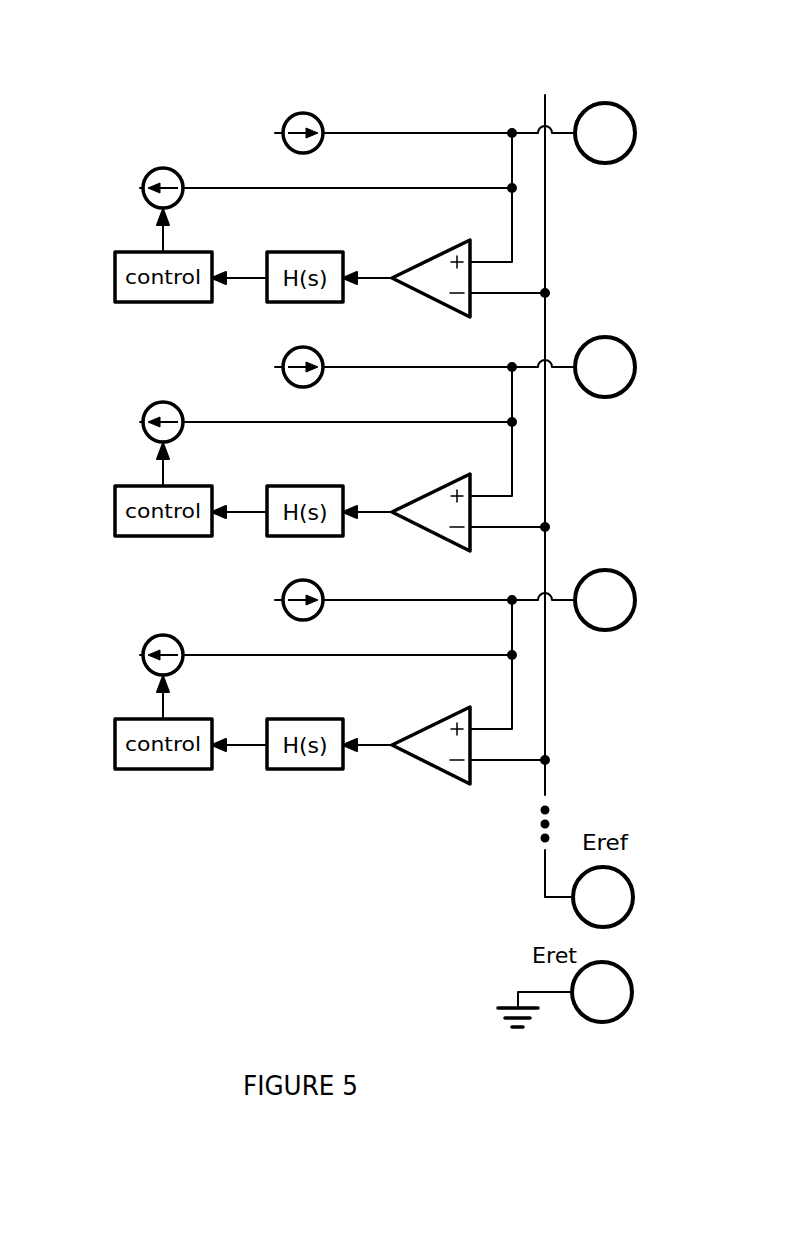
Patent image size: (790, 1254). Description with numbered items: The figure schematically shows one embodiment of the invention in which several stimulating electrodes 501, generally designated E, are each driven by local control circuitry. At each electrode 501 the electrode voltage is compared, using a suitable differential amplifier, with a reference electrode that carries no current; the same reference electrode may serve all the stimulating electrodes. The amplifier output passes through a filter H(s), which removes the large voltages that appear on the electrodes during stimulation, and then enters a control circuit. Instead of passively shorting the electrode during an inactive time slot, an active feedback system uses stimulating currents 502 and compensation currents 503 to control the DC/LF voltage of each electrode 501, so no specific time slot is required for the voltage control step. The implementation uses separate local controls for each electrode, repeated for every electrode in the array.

The electrode 501 is at (637, 133).
The stimulating current 502 is at (287, 120).
The compensation current 503 is at (147, 172).